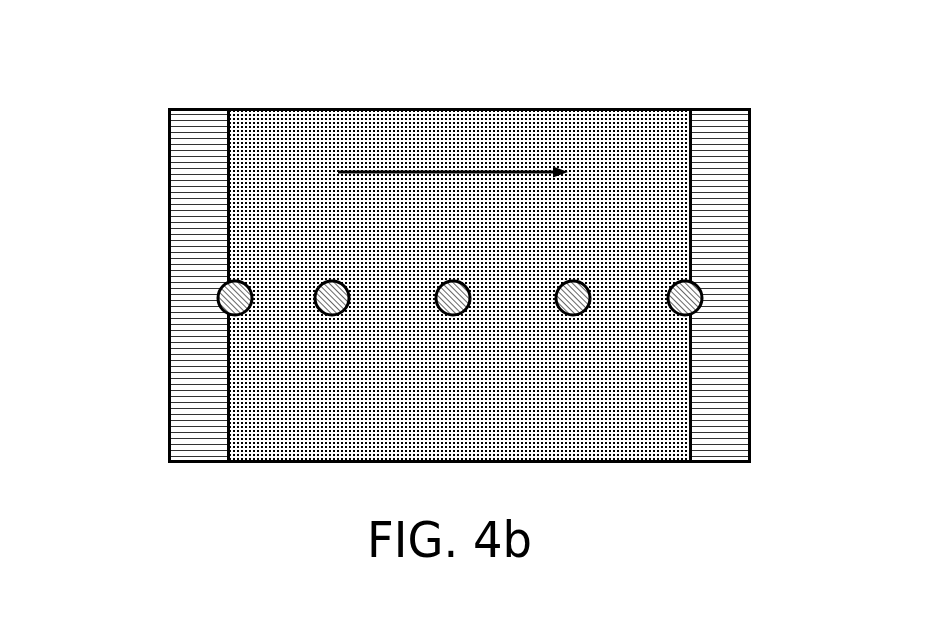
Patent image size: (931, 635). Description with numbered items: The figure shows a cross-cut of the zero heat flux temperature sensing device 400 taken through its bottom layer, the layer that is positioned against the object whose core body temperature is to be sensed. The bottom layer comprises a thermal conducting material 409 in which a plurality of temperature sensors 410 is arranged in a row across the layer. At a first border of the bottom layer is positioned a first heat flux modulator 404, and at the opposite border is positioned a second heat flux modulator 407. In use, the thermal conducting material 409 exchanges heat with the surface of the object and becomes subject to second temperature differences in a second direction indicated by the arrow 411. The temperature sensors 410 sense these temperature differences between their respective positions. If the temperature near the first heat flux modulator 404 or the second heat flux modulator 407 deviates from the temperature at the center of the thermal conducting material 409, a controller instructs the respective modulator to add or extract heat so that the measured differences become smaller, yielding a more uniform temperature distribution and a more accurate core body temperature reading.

The zero heat flux temperature sensing device 400 is at (432, 249).
The first heat flux modulator 404 is at (198, 118).
The second heat flux modulator 407 is at (712, 118).
The thermal conducting material 409 is at (570, 117).
The temperature sensors 410 is at (217, 300).
The arrow 411 is at (388, 172).